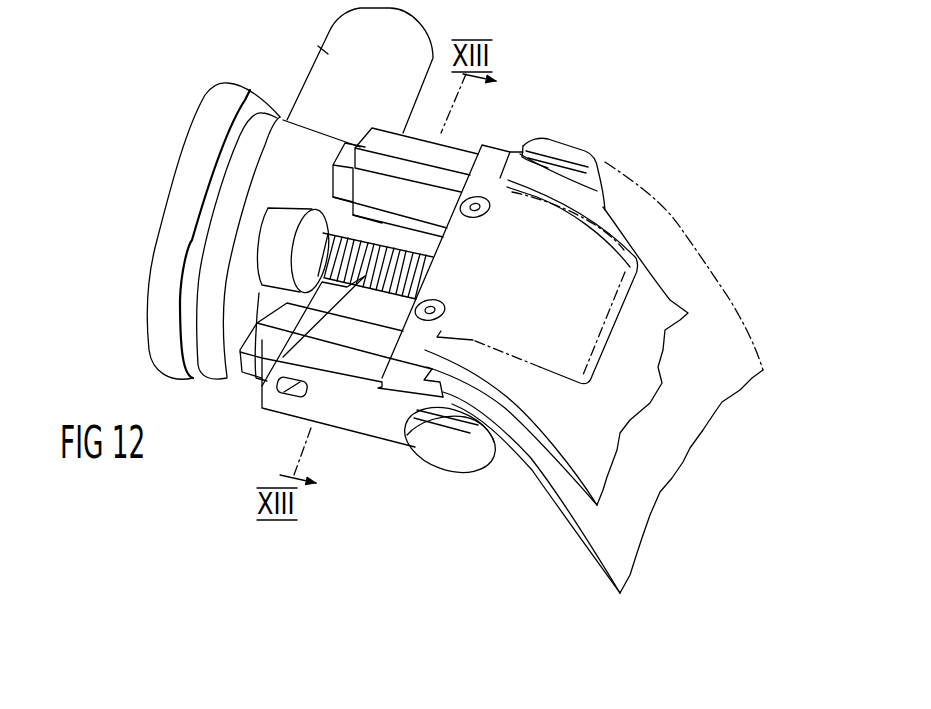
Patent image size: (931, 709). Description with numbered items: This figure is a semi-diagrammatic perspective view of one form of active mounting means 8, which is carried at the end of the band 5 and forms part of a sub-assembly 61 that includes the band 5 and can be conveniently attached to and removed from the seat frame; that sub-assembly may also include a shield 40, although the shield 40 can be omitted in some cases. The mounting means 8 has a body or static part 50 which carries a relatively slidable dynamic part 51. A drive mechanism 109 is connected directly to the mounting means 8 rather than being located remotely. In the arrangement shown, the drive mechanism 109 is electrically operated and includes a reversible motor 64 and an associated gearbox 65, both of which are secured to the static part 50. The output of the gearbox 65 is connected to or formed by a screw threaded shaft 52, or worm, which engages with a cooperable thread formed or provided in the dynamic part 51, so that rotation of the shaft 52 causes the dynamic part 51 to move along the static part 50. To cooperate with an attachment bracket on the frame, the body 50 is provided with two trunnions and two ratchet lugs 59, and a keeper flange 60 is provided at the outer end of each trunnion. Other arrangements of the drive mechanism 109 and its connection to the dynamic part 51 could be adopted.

The band 5 is at (646, 298).
The active mounting means 8 is at (503, 140).
The shield 40 is at (663, 230).
The static part 50 is at (423, 150).
The dynamic part 51 is at (507, 240).
The screw threaded shaft 52 is at (268, 382).
The ratchet lug 59 is at (281, 395).
The keeper flange 60 is at (590, 151).
The sub-assembly 61 is at (572, 561).
The reversible motor 64 is at (337, 80).
The gearbox 65 is at (203, 132).
The drive mechanism 109 is at (320, 48).